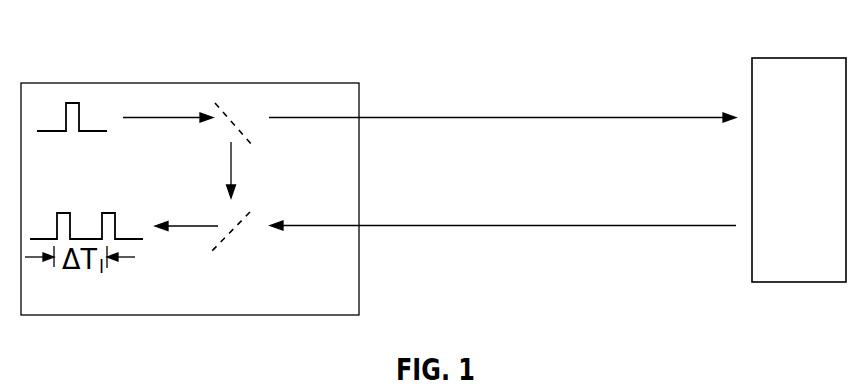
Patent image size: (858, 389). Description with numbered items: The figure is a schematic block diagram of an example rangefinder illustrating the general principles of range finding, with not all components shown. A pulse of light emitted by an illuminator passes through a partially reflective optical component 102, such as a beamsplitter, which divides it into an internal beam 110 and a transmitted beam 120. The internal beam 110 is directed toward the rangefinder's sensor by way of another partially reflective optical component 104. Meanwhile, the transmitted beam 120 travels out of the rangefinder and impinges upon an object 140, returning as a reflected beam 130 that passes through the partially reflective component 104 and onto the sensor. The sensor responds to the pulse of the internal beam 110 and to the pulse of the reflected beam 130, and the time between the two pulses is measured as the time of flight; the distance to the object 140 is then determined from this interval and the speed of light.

The partially reflective optical component 102 is at (227, 117).
The partially reflective optical component 104 is at (223, 240).
The internal beam 110 is at (196, 177).
The transmitted beam 120 is at (502, 115).
The reflected beam 130 is at (523, 223).
The object 140 is at (821, 58).